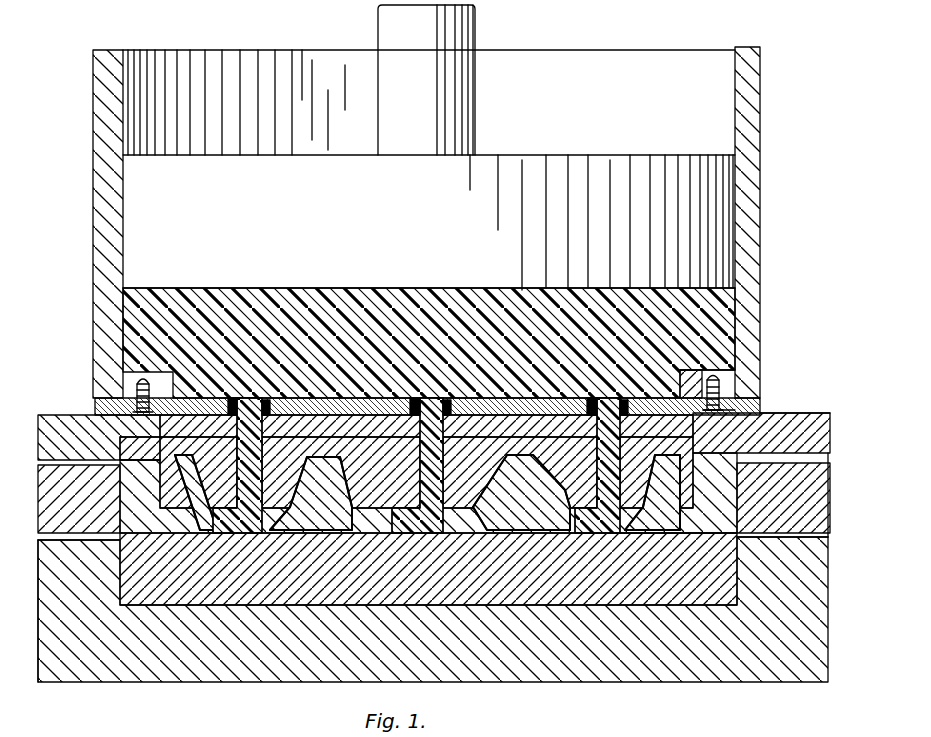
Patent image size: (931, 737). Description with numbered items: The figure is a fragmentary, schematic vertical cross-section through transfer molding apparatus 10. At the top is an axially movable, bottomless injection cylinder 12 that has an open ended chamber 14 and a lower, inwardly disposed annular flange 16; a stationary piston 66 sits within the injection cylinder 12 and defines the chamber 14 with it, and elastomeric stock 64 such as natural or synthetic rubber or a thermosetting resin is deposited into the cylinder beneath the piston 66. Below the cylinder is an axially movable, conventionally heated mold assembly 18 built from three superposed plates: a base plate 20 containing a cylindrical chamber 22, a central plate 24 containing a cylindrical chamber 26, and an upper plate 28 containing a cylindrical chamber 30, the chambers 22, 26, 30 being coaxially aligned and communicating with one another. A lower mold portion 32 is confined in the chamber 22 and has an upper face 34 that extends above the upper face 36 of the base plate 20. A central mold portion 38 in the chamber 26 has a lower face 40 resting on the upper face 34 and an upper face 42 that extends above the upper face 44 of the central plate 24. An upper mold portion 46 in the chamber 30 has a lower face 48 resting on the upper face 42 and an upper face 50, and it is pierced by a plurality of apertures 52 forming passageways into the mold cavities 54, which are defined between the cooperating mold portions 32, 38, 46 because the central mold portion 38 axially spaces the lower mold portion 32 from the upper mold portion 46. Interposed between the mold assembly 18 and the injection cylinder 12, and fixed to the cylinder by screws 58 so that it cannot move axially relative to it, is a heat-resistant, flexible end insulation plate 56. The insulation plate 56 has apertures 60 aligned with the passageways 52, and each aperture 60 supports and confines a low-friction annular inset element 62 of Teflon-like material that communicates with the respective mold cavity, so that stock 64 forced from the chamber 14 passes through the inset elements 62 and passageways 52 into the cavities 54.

The transfer molding apparatus 10 is at (720, 10).
The injection cylinder 12 is at (86, 82).
The open ended chamber 14 is at (737, 308).
The annular flange 16 is at (710, 366).
The mold assembly 18 is at (34, 608).
The base plate 20 is at (802, 678).
The cylindrical chamber 22 is at (740, 583).
The central plate 24 is at (828, 518).
The cylindrical chamber 26 is at (115, 484).
The upper plate 28 is at (820, 420).
The cylindrical chamber 30 is at (166, 432).
The lower mold portion 32 is at (122, 598).
The upper face 34 is at (153, 528).
The upper face 36 is at (75, 542).
The central mold portion 38 is at (318, 528).
The lower face 40 is at (702, 534).
The upper face 42 is at (140, 471).
The upper face 44 is at (99, 437).
The upper mold portion 46 is at (690, 375).
The lower face 48 is at (761, 433).
The upper face 50 is at (203, 398).
The apertures 52 is at (268, 440).
The mold cavities 54 is at (258, 528).
The end insulation plate 56 is at (740, 400).
The screws 58 is at (135, 388).
The apertures 60 is at (233, 398).
The annular inset elements 62 is at (266, 400).
The elastomeric stock 64 is at (428, 292).
The stationary piston 66 is at (555, 165).